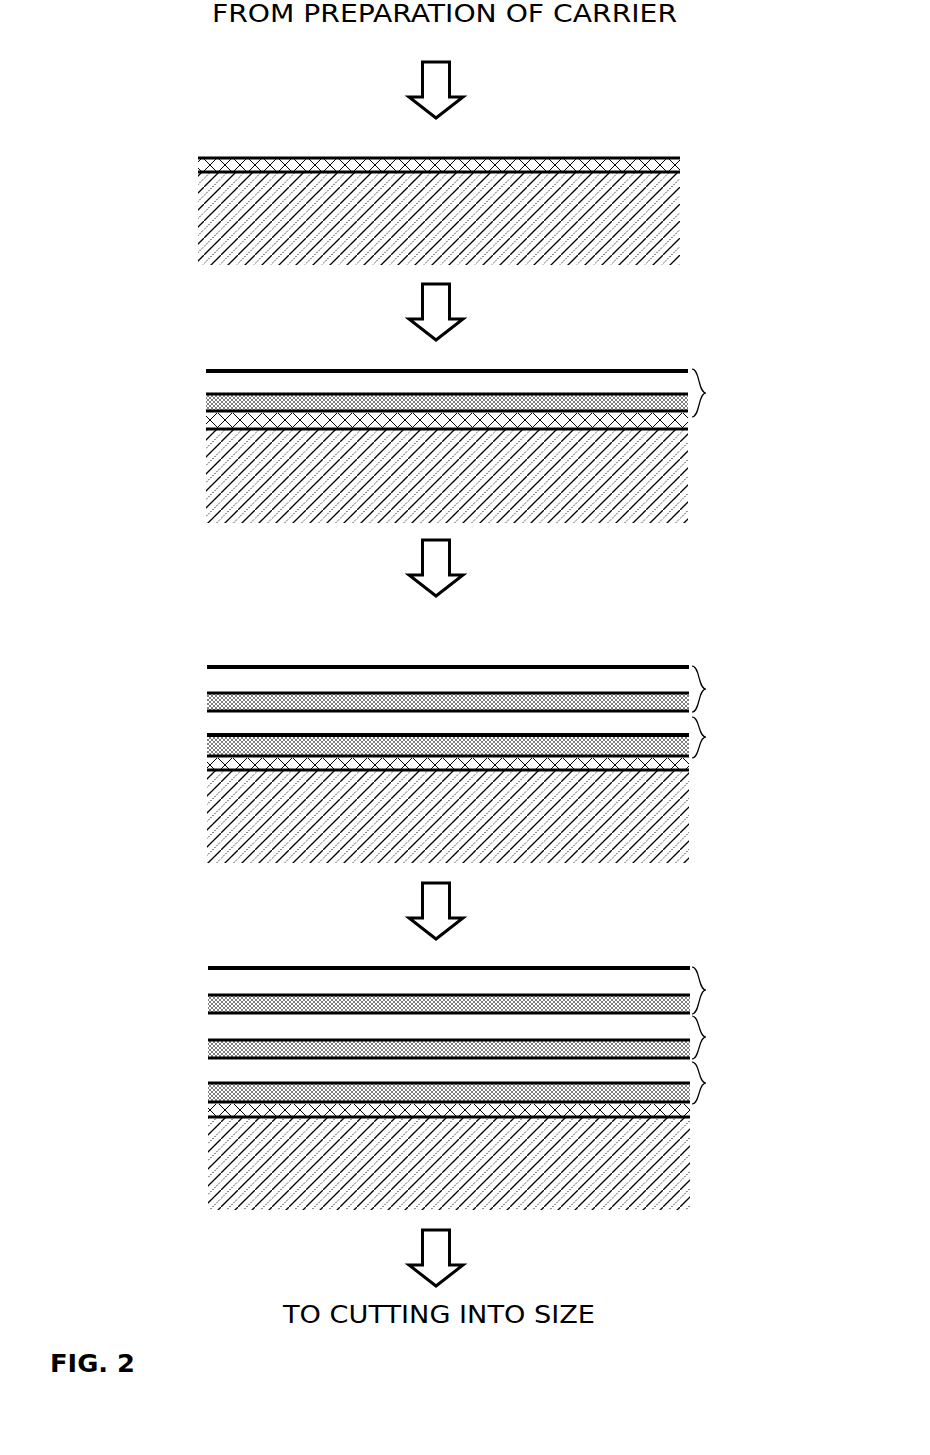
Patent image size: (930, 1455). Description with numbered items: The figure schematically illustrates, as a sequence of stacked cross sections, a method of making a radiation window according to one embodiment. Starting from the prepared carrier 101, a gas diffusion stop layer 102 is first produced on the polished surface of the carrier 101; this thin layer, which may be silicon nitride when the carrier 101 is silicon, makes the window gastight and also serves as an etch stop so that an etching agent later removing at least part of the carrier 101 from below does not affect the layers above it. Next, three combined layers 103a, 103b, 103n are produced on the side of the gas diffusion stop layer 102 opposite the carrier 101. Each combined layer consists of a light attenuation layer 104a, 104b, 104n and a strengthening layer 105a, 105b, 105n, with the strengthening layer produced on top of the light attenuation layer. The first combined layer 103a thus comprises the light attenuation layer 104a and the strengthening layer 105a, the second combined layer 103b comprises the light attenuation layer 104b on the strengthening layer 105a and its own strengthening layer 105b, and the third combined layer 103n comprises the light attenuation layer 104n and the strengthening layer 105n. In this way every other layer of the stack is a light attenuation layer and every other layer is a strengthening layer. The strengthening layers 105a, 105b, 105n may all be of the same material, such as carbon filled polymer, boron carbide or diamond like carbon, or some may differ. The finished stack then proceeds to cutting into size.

The carrier 101 is at (676, 230).
The gas diffusion stop layer 102 is at (680, 165).
The first combined layer 103a is at (735, 736).
The second combined layer 103b is at (735, 862).
The third combined layer 103n is at (735, 990).
The light attenuation layer 104a is at (206, 402).
The light attenuation layer 104b is at (207, 700).
The light attenuation layer 104n is at (208, 995).
The strengthening layer 105a is at (206, 373).
The strengthening layer 105b is at (207, 677).
The strengthening layer 105n is at (208, 972).